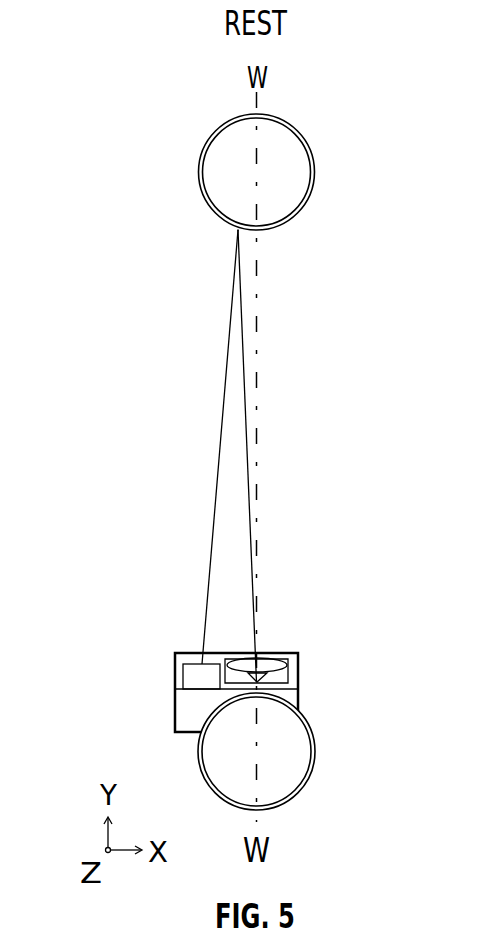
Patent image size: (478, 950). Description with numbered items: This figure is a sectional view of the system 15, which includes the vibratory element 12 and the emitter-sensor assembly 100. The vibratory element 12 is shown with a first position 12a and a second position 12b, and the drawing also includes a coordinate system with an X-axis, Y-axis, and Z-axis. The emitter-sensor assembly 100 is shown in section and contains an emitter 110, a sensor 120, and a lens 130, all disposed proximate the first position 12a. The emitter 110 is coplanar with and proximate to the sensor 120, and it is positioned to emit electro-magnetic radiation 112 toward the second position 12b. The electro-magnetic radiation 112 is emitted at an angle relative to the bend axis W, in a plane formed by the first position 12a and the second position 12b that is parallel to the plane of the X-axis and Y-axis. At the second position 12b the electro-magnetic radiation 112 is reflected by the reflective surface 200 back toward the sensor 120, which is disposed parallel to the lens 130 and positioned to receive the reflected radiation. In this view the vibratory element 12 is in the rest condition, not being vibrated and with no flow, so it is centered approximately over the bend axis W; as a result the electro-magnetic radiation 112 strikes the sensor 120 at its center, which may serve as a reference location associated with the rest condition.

The system 15 is at (140, 128).
The vibratory element 12 is at (305, 463).
The first position 12a is at (318, 725).
The second position 12b is at (274, 241).
The emitter-sensor assembly 100 is at (222, 697).
The emitter 110 is at (180, 676).
The electro-magnetic radiation 112 is at (220, 432).
The sensor 120 is at (297, 689).
The lens 130 is at (295, 662).
The reflective surface 200 is at (231, 224).